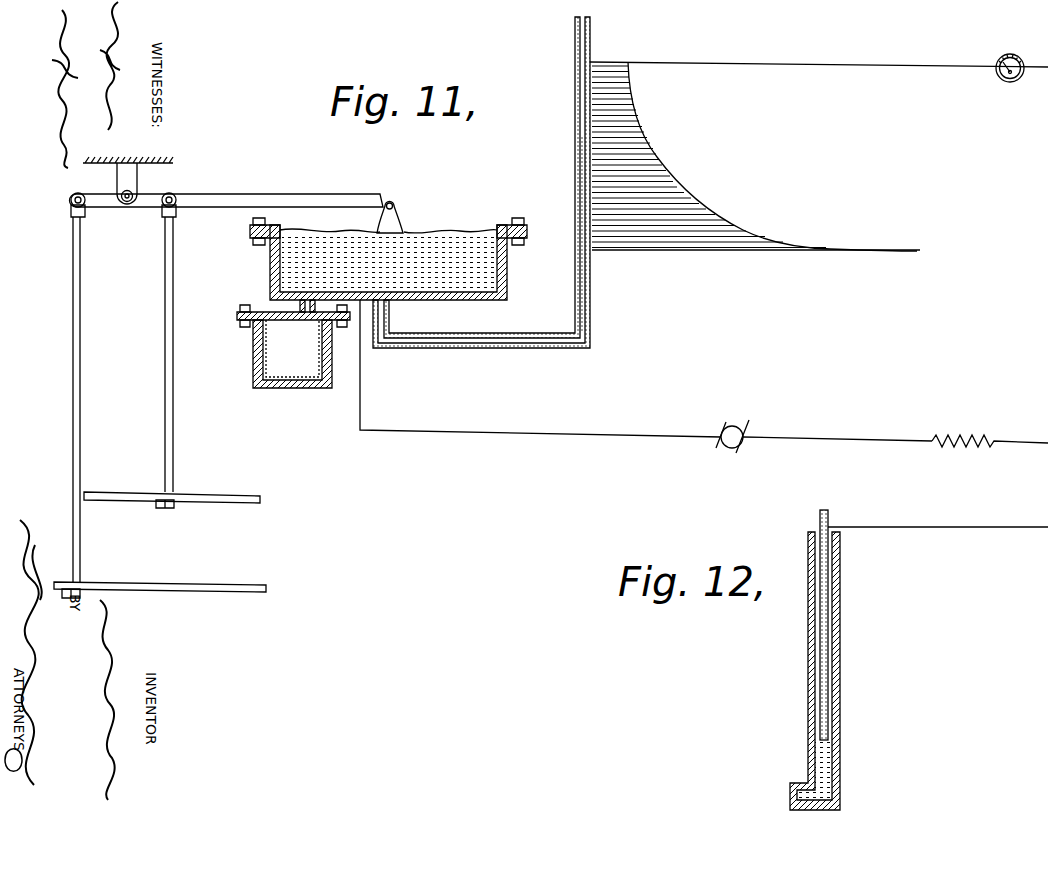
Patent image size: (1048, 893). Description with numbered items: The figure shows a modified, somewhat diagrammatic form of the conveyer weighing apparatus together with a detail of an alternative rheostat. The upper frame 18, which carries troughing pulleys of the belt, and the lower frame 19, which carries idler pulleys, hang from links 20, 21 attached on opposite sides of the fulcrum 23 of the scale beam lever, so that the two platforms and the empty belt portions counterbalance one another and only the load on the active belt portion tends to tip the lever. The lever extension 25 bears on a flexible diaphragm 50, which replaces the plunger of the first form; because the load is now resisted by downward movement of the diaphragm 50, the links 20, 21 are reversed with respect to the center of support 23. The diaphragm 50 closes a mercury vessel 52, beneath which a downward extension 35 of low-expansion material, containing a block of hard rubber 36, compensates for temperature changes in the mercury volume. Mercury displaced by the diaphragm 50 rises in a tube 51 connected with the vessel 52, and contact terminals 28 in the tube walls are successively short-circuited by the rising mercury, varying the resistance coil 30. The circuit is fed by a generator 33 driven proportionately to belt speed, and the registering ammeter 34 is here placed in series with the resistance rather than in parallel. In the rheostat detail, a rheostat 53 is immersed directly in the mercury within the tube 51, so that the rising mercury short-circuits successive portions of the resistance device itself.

In FIG. 11, the frame 18 is at (226, 492).
In FIG. 11, the frame 19 is at (218, 576).
In FIG. 11, the link 20 is at (173, 335).
In FIG. 11, the link 21 is at (80, 335).
In FIG. 11, the fulcrum 23 is at (126, 204).
In FIG. 11, the extension 25 is at (244, 198).
In FIG. 11, the contact terminals 28 is at (577, 66).
In FIG. 11, the resistance coil 30 is at (756, 156).
In FIG. 11, the generator 33 is at (704, 376).
In FIG. 11, the registering ammeter 34 is at (1010, 55).
In FIG. 11, the downward extension 35 is at (281, 346).
In FIG. 11, the block of hard rubber 36 is at (290, 345).
In FIG. 11, the flexible diaphragm 50 is at (424, 230).
In FIG. 11, the tube 51 is at (593, 302).
In FIG. 12, the tube 51 is at (838, 676).
In FIG. 11, the vessel 52 is at (507, 282).
In FIG. 12, the rheostat 53 is at (832, 596).